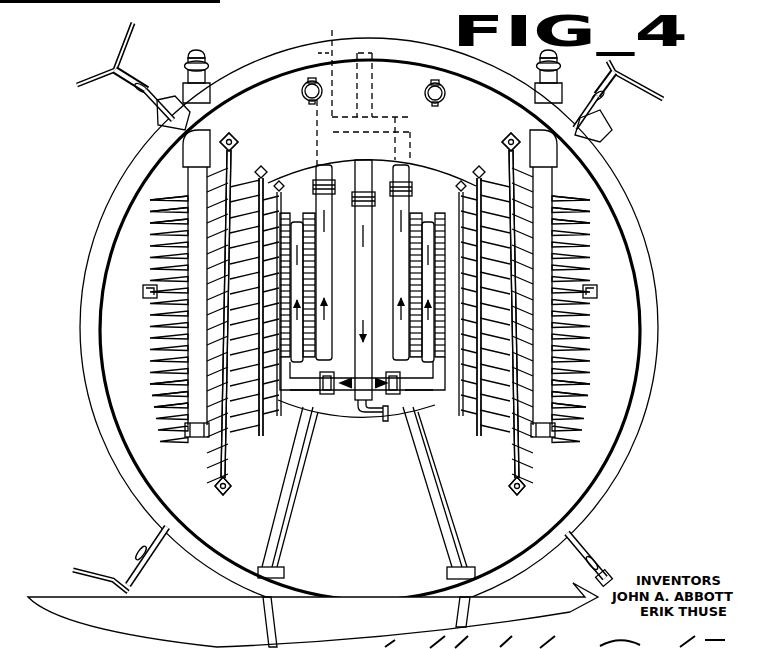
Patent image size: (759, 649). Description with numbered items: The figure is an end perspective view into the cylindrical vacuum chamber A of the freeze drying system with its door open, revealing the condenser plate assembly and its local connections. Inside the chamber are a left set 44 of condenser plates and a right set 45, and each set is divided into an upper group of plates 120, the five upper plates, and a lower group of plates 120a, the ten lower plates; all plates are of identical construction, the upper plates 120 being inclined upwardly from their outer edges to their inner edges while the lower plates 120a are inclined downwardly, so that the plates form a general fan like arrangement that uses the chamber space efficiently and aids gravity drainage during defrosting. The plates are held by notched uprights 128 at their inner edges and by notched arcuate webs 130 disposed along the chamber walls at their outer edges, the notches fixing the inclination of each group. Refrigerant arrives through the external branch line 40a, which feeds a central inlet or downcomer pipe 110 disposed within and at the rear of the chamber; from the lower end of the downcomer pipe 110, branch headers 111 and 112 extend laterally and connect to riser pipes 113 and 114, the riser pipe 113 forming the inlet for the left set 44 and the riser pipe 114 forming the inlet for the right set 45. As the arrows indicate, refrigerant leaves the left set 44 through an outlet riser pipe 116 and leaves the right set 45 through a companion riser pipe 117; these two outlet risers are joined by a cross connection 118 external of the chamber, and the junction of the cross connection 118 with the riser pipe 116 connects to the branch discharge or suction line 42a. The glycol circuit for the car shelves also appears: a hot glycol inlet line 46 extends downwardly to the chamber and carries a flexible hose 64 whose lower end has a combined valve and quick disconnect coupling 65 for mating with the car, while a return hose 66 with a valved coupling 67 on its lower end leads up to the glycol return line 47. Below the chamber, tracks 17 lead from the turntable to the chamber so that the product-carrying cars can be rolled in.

The vacuum chamber A is at (130, 163).
The tracks 17 is at (280, 617).
The external branch line 40a is at (379, 50).
The branch discharge or suction line 42a is at (327, 36).
The left set of condenser plates 44 is at (147, 267).
The right set of condenser plates 45 is at (603, 267).
The hot glycol inlet line 46 is at (188, 75).
The glycol return line 47 is at (550, 88).
The flexible hose 64 is at (160, 353).
The combined valve and quick disconnect coupling 65 is at (185, 431).
The hose 66 is at (560, 360).
The valved coupling 67 is at (552, 433).
The central inlet or downcomer pipe 110 is at (343, 404).
The branch header 111 is at (318, 391).
The branch header 112 is at (409, 410).
The riser pipe 113 is at (296, 224).
The riser pipe 114 is at (428, 224).
The outlet riser pipe 116 is at (320, 388).
The companion riser pipe 117 is at (402, 392).
The cross connection 118 is at (399, 115).
The upper group of plates 120 is at (158, 240).
The lower group of plates 120a is at (170, 416).
The notched uprights 128 is at (260, 167).
The notched arcuate webs 130 is at (226, 135).